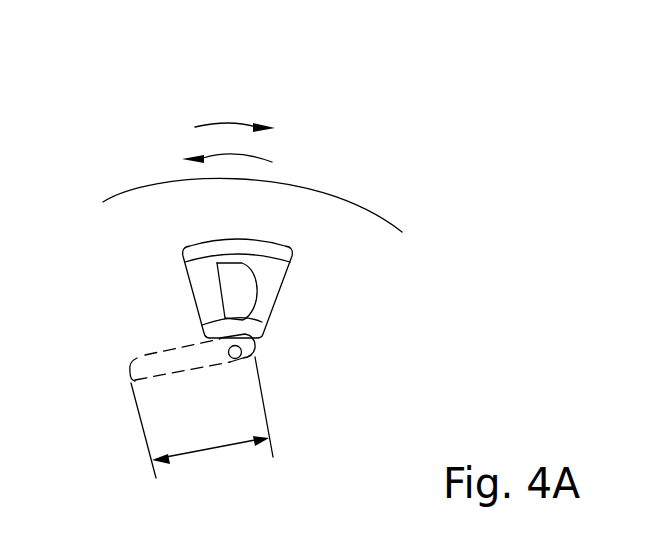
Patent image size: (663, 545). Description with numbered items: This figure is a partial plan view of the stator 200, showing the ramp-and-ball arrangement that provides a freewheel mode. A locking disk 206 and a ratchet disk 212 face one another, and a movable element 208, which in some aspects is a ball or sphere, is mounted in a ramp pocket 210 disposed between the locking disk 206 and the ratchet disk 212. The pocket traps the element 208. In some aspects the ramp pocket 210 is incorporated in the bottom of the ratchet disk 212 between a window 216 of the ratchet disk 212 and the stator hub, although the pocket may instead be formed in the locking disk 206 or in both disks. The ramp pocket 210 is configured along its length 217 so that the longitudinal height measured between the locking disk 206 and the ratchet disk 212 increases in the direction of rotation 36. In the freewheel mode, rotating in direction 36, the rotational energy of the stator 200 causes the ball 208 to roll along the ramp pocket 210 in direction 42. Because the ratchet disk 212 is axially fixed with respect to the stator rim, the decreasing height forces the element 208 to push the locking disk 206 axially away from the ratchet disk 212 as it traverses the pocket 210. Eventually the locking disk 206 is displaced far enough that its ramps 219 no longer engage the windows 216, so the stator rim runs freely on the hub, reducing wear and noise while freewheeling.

The stator 200 is at (309, 84).
The ratchet disk 212 is at (338, 238).
The direction 42 is at (229, 123).
The direction of rotation 36 is at (223, 155).
The locking disk 206 is at (319, 310).
The window 216 is at (277, 266).
The ramp 219 is at (213, 295).
The ramp pocket 210 is at (212, 394).
The movable element 208 is at (251, 357).
The length 217 is at (207, 448).